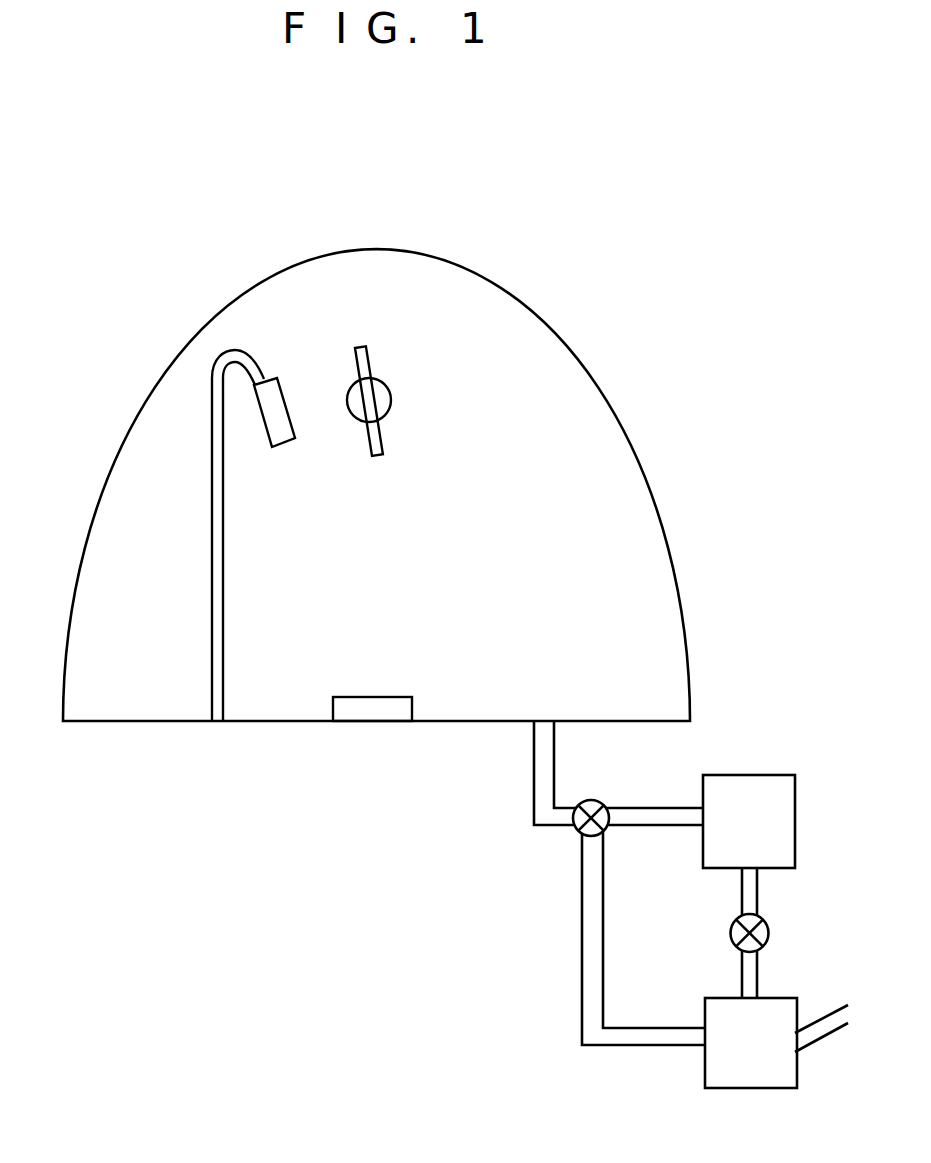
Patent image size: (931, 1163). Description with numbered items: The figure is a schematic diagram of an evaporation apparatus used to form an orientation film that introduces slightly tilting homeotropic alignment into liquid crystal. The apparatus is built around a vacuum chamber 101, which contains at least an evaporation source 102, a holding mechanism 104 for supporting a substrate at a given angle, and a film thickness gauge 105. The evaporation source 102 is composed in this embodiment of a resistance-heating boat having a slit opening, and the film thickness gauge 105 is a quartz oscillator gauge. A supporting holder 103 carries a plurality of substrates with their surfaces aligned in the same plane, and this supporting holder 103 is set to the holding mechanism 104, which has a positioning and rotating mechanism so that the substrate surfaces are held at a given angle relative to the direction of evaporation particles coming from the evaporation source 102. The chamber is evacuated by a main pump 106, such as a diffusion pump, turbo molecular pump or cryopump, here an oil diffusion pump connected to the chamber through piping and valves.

The vacuum chamber 101 is at (490, 278).
The evaporation source 102 is at (377, 695).
The supporting holder 103 is at (355, 348).
The holding mechanism 104 is at (388, 403).
The film thickness gauge 105 is at (272, 413).
The main pump 106 is at (772, 1018).